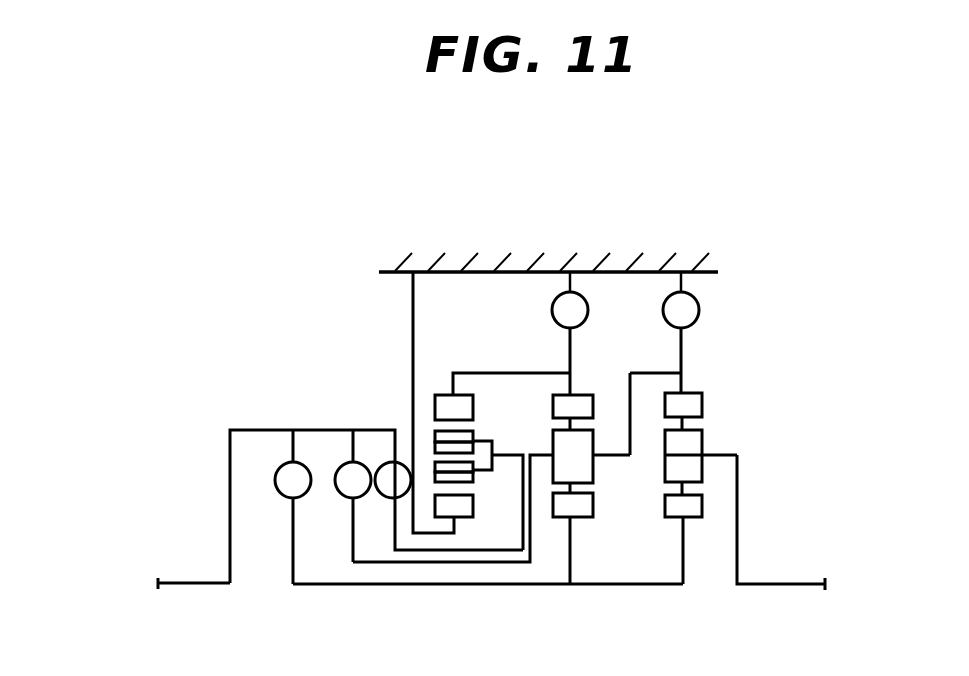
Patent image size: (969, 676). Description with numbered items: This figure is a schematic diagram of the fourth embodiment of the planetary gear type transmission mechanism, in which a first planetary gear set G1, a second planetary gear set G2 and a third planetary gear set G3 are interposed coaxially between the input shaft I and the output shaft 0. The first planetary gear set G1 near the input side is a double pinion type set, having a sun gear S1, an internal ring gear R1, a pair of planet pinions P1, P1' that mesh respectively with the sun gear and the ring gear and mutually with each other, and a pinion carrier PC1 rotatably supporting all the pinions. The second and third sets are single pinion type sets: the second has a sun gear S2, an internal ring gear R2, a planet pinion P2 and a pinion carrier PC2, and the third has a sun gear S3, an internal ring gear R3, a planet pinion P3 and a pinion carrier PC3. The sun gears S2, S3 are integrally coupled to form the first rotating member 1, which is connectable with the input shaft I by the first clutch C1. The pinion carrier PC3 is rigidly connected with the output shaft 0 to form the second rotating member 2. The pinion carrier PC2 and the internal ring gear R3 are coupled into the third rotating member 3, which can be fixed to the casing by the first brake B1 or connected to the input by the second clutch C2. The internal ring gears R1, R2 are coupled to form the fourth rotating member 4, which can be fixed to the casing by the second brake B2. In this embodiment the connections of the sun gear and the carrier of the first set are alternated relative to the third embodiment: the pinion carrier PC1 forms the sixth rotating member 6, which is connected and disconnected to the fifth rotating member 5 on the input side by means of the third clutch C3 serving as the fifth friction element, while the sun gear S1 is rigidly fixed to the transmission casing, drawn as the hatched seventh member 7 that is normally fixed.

The seventh member 7 is at (519, 258).
The second brake B2 is at (552, 306).
The first brake B1 is at (699, 305).
The fourth rotating member 4 is at (576, 345).
The third rotating member 3 is at (687, 352).
The internal ring gear R1 is at (441, 393).
The planet pinion P1' is at (475, 422).
The pinion carrier PC1 is at (505, 453).
The planet pinion P1 is at (471, 481).
The sun gear S1 is at (474, 510).
The internal ring gear R2 is at (596, 396).
The planet pinion P2 is at (594, 442).
The pinion carrier PC2 is at (607, 460).
The sun gear S2 is at (564, 518).
The internal ring gear R3 is at (704, 406).
The planet pinion P3 is at (704, 441).
The pinion carrier PC3 is at (737, 458).
The sun gear S3 is at (704, 505).
The fifth rotating member 5 is at (363, 428).
The input shaft I is at (187, 582).
The first clutch C1 is at (284, 495).
The second clutch C2 is at (345, 497).
The third clutch C3 is at (390, 498).
The sixth rotating member 6 is at (422, 560).
The first rotating member 1 is at (556, 590).
The first planetary gear set G1 is at (467, 532).
The second planetary gear set G2 is at (597, 530).
The third planetary gear set G3 is at (691, 547).
The second rotating member 2 is at (743, 544).
The output shaft 0 is at (793, 583).